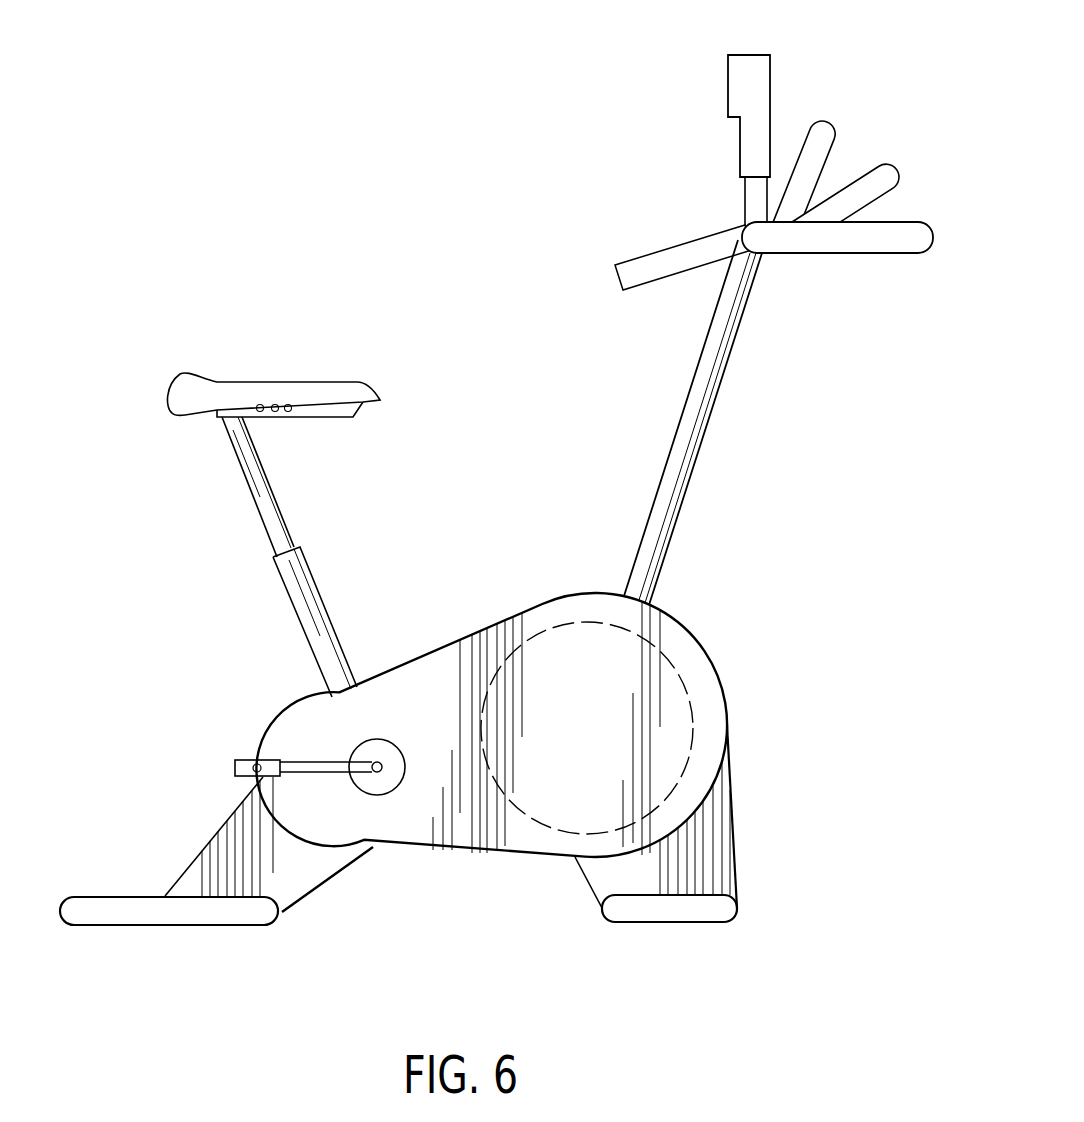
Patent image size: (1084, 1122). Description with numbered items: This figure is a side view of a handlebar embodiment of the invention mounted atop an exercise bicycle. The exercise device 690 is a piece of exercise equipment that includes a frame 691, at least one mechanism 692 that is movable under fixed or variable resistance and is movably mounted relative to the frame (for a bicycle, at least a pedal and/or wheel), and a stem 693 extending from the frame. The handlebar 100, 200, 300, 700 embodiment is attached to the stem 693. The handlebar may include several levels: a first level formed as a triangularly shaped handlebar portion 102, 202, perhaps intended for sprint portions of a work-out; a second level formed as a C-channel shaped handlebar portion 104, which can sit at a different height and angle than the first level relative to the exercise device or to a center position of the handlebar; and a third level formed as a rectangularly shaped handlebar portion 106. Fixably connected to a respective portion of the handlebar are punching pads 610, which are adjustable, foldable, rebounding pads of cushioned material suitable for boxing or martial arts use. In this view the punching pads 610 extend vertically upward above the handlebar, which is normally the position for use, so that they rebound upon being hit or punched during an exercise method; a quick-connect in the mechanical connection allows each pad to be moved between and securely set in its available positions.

The handlebar 100 is at (500, 477).
The handlebar 200 is at (500, 477).
The handlebar 300 is at (500, 477).
The handlebar 700 is at (657, 73).
The punching pads 610 is at (727, 102).
The triangularly shaped handlebar portion 102 is at (815, 160).
The triangularly shaped handlebar portion 202 is at (847, 100).
The C-channel shaped handlebar portion 104 is at (883, 162).
The rectangularly shaped handlebar portion 106 is at (918, 233).
The frame 691 is at (412, 650).
The mechanism 692 is at (393, 753).
The stem 693 is at (663, 575).
The exercise device 690 is at (507, 895).